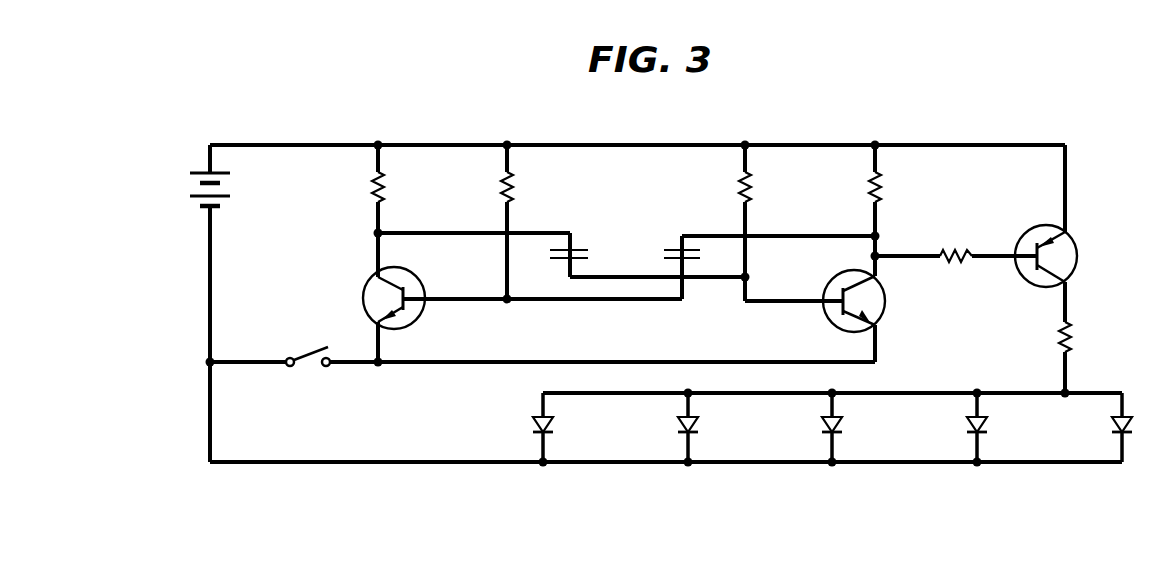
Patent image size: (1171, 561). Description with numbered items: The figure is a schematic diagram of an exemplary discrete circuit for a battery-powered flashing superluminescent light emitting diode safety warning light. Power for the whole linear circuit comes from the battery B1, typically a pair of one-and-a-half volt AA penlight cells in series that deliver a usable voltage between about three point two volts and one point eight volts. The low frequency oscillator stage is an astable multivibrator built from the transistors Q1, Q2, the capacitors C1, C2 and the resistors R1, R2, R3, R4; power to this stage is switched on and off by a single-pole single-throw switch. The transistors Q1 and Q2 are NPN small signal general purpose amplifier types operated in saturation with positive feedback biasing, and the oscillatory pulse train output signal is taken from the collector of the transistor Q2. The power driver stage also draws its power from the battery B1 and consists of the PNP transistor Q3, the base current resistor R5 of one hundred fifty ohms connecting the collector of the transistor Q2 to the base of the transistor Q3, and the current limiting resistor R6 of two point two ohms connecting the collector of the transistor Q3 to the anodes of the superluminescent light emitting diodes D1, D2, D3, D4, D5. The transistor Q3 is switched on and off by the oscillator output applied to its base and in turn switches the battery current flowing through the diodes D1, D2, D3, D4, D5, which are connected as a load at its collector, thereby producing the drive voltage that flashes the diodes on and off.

The battery B1 is at (193, 181).
The resistor R1 is at (395, 189).
The resistor R2 is at (524, 222).
The resistor R3 is at (761, 223).
The resistor R4 is at (892, 208).
The base current resistor R5 is at (956, 236).
The current limiting resistor R6 is at (1081, 337).
The capacitor C1 is at (698, 258).
The capacitor C2 is at (585, 258).
The transistor Q1 is at (405, 297).
The transistor Q2 is at (870, 309).
The PNP transistor Q3 is at (1060, 216).
The superluminescent light emitting diode D1 is at (562, 427).
The superluminescent light emitting diode D2 is at (706, 427).
The superluminescent light emitting diode D3 is at (850, 427).
The superluminescent light emitting diode D4 is at (995, 427).
The superluminescent light emitting diode D5 is at (1140, 427).